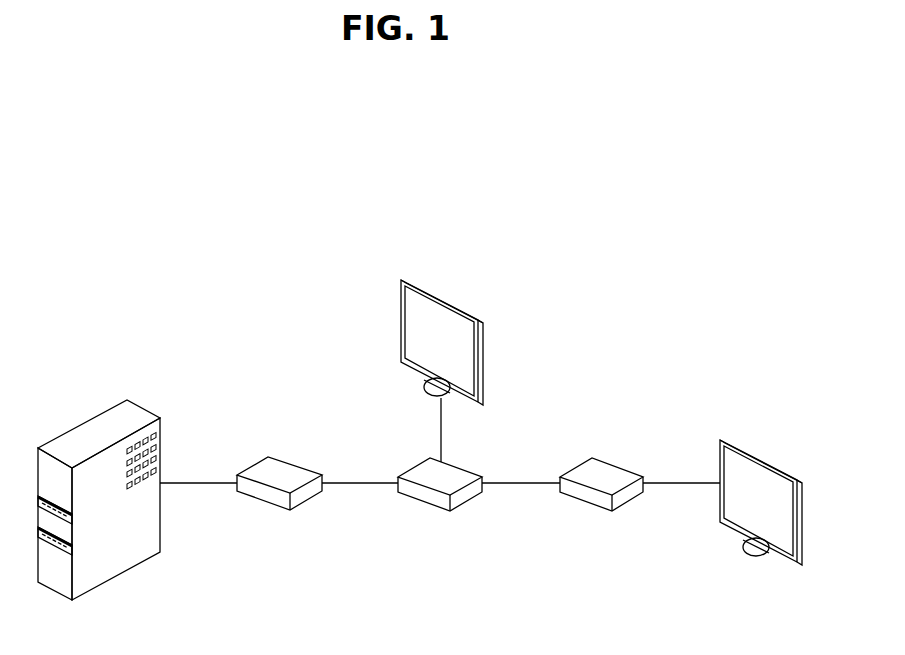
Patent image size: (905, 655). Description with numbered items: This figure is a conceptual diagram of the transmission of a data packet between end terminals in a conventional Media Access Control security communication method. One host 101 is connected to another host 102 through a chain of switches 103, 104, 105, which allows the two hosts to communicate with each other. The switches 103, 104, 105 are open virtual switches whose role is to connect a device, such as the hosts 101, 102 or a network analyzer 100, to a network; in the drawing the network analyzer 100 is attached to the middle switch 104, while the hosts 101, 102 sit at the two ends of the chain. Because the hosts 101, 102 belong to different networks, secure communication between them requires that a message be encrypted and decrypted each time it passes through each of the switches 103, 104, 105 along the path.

The network analyzer 100 is at (449, 297).
The host 101 is at (80, 422).
The host 102 is at (764, 459).
The switch 103 is at (256, 499).
The switch 104 is at (422, 502).
The switch 105 is at (584, 503).